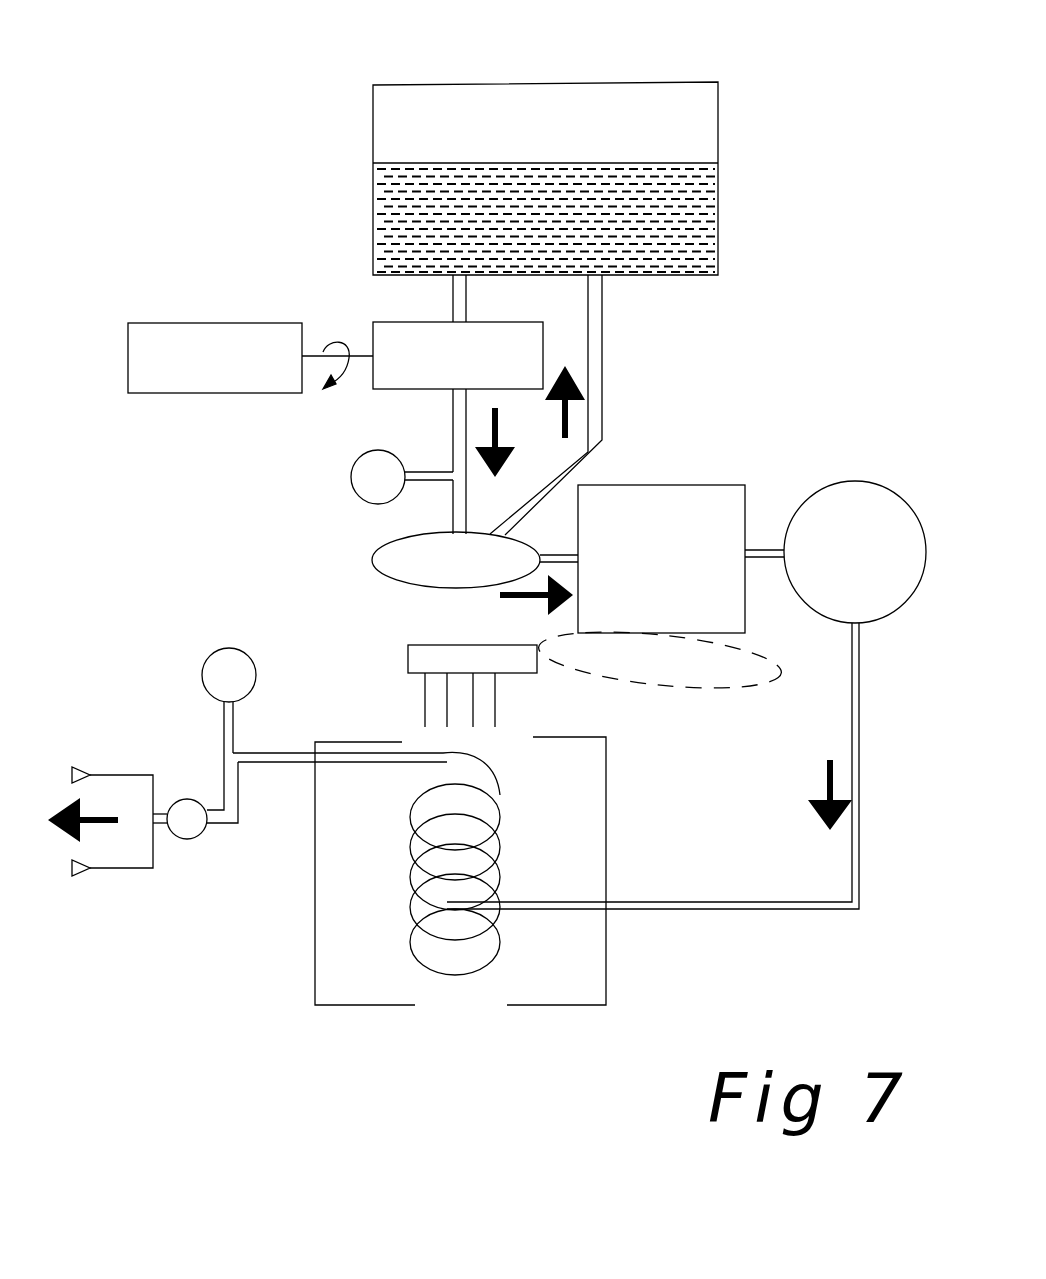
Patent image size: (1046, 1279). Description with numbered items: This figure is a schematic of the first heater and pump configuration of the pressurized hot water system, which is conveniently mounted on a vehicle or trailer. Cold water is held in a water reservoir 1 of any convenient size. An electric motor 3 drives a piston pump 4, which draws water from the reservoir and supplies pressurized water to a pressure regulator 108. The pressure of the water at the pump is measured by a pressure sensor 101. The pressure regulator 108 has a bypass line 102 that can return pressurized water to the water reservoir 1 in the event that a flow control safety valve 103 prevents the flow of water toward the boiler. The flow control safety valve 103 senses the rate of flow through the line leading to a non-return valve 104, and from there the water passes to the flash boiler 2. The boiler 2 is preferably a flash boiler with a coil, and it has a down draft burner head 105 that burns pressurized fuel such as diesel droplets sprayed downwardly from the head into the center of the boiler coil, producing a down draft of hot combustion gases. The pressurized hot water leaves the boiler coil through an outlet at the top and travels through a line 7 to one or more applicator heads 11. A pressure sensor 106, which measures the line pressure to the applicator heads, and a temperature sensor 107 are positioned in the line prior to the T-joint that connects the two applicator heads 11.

The water reservoir 1 is at (478, 82).
The flash boiler 2 is at (378, 993).
The electric motor 3 is at (207, 323).
The piston pump 4 is at (401, 390).
The line 7 is at (213, 785).
The applicator heads 11 is at (110, 732).
The pressure sensor 101 is at (355, 493).
The bypass line 102 is at (690, 372).
The flow control safety valve 103 is at (728, 483).
The non-return valve 104 is at (897, 462).
The down draft burner head 105 is at (413, 678).
The pressure sensor 106 is at (278, 603).
The temperature sensor 107 is at (187, 840).
The pressure regulator 108 is at (372, 562).